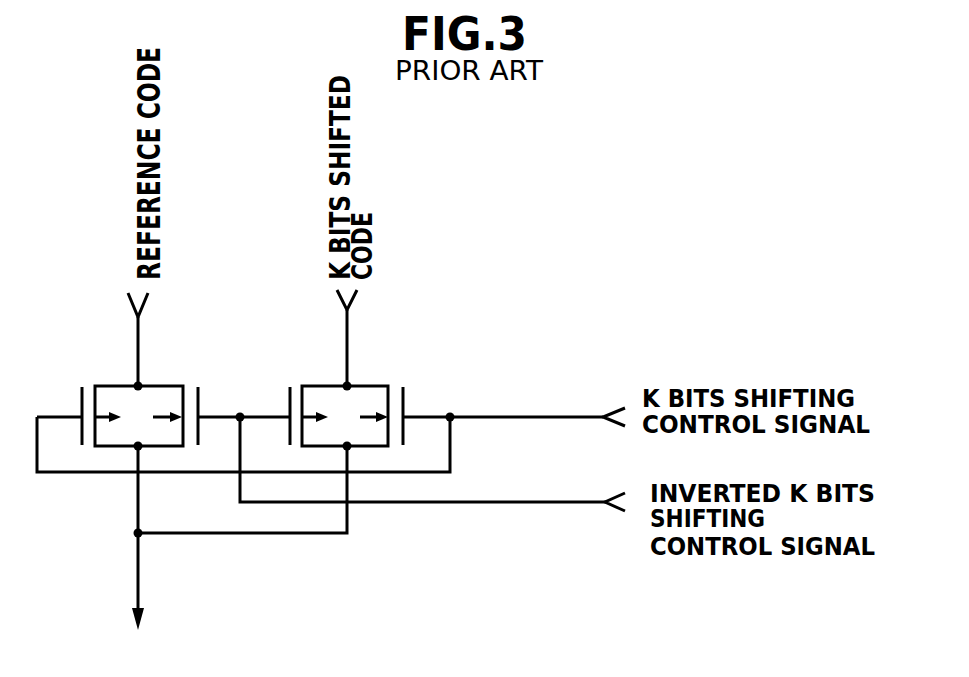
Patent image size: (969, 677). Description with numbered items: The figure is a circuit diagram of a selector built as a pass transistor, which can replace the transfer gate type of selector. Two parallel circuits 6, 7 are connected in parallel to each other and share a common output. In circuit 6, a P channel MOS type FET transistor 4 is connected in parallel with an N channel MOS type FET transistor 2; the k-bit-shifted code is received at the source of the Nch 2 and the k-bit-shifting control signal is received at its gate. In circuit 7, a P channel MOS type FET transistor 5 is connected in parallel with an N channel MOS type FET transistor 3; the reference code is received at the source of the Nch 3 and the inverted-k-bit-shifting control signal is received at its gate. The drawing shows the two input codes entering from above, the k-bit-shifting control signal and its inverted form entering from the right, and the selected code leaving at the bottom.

The circuit 7 is at (138, 314).
The circuit 6 is at (351, 310).
The P channel MOS type FET transistor 5 is at (110, 401).
The N channel MOS type FET transistor 3 is at (167, 401).
The P channel MOS type FET transistor 4 is at (320, 400).
The N channel MOS type FET transistor 2 is at (363, 401).